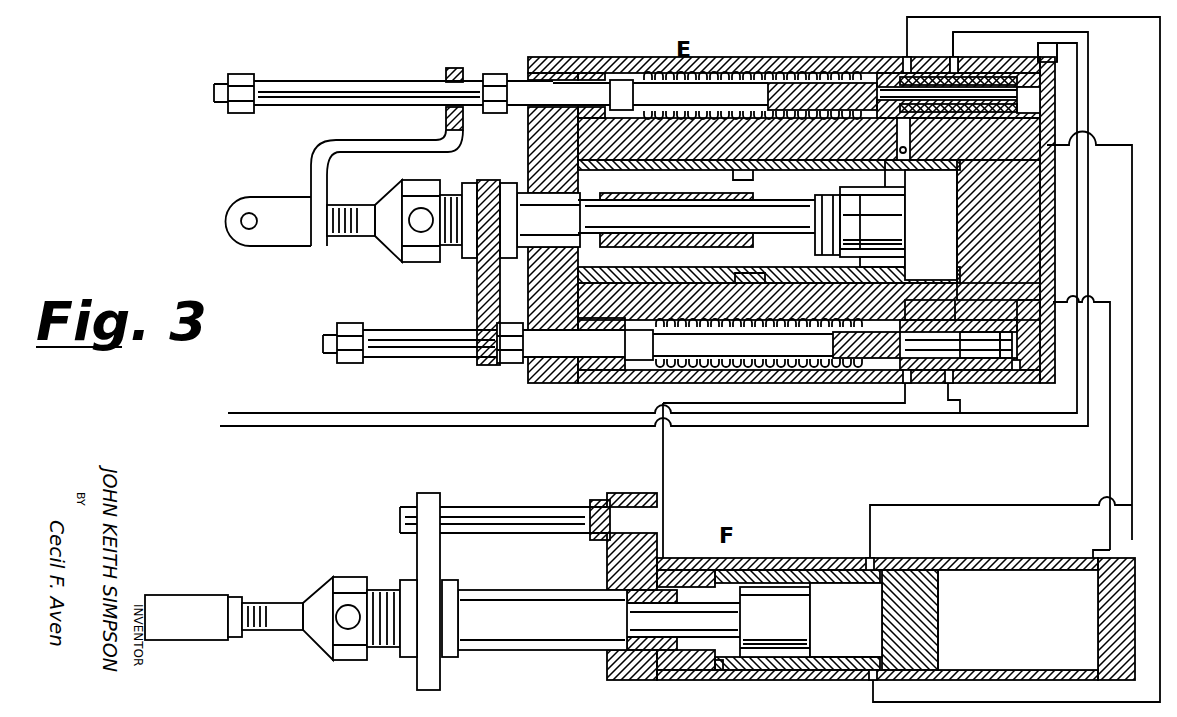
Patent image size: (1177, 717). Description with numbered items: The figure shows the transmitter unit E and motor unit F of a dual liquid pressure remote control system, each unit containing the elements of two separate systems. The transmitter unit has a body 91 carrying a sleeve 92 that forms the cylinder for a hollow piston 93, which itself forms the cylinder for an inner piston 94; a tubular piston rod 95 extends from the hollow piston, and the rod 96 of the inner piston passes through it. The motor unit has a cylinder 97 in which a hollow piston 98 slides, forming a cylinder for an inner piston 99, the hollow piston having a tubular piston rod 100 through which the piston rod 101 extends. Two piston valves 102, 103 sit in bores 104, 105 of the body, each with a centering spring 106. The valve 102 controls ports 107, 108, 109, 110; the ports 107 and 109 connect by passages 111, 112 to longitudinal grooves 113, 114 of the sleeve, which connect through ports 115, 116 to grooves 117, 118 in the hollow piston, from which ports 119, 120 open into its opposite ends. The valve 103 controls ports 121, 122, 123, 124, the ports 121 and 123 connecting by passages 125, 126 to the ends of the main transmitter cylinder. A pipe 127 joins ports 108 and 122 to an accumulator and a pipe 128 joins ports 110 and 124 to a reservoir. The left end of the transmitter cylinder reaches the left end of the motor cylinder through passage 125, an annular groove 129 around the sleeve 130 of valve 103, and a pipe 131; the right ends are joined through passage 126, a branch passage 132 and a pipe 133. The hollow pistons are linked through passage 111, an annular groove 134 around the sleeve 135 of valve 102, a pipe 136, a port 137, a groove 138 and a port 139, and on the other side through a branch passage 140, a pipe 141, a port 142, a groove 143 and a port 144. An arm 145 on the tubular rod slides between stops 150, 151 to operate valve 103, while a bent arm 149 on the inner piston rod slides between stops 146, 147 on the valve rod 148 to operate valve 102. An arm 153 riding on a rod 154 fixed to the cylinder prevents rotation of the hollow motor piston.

The body 91 is at (545, 66).
The sleeve 92 is at (585, 165).
The hollow piston 93 is at (733, 180).
The inner piston 94 is at (872, 222).
The tubular piston rod 95 is at (550, 205).
The rod of the inner piston 96 is at (365, 238).
The cylinder 97 is at (1108, 608).
The hollow piston 98 is at (920, 616).
The inner piston 99 is at (775, 622).
The tubular piston rod 100 is at (531, 597).
The piston rod 101 is at (268, 605).
The piston valve 102 is at (1020, 96).
The piston valve 103 is at (1000, 375).
The bore 104 is at (802, 74).
The bore 105 is at (826, 362).
The centering spring 106 is at (752, 78).
The port 107 is at (897, 122).
The port 108 is at (953, 60).
The port 109 is at (1000, 119).
The port 110 is at (1050, 60).
The passage 111 is at (890, 160).
The passage 112 is at (1000, 128).
The longitudinal groove 113 is at (905, 268).
The longitudinal groove 114 is at (940, 162).
The port 115 is at (737, 283).
The port 116 is at (800, 172).
The longitudinal groove 117 is at (828, 228).
The longitudinal groove 118 is at (865, 180).
The port 119 is at (795, 246).
The port 120 is at (953, 185).
The port 121 is at (920, 325).
The port 122 is at (948, 388).
The port 123 is at (1020, 375).
The port 124 is at (1030, 378).
The passage 125 is at (615, 300).
The passage 126 is at (1040, 285).
The pipe 127 is at (305, 428).
The pipe 128 is at (302, 412).
The annular groove 129 is at (915, 388).
The sleeve 130 is at (983, 375).
The pipe 131 is at (663, 476).
The branch passage 132 is at (1057, 300).
The pipe 133 is at (1107, 452).
The annular groove 134 is at (905, 62).
The sleeve 135 is at (992, 74).
The pipe 136 is at (1158, 548).
The port 137 is at (873, 682).
The longitudinal groove 138 is at (805, 682).
The port 139 is at (717, 677).
The branch passage 140 is at (1060, 150).
The pipe 141 is at (997, 506).
The port 142 is at (868, 568).
The longitudinal groove 143 is at (790, 576).
The port 144 is at (880, 582).
The arm 145 is at (485, 291).
The stop 146 is at (240, 78).
The stop 147 is at (493, 80).
The valve rod 148 is at (350, 90).
The bent arm 149 is at (318, 155).
The stop 150 is at (350, 365).
The stop 151 is at (510, 366).
The arm 153 is at (432, 560).
The rod 154 is at (505, 511).